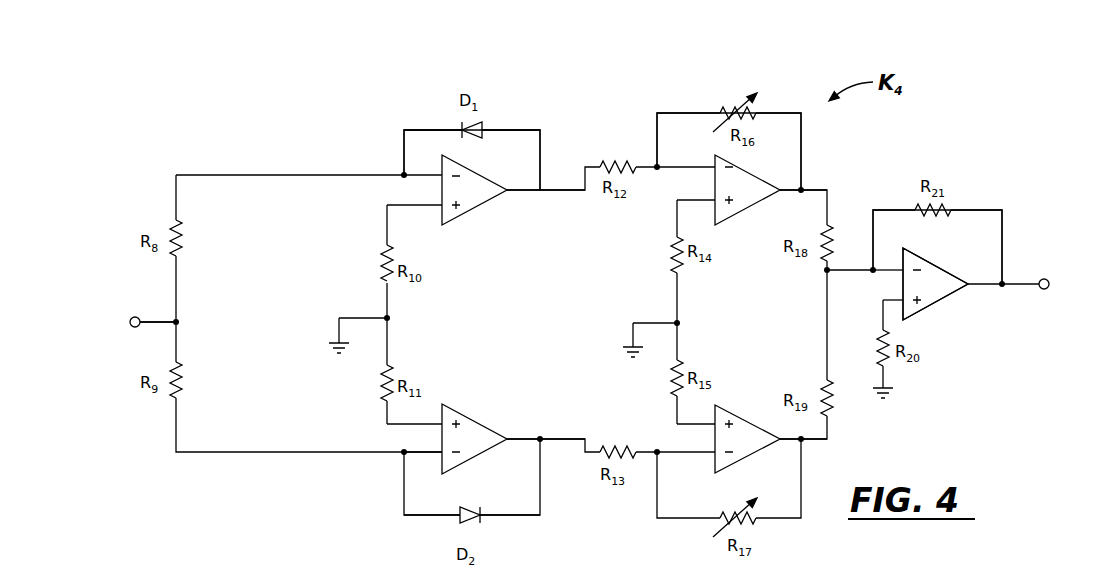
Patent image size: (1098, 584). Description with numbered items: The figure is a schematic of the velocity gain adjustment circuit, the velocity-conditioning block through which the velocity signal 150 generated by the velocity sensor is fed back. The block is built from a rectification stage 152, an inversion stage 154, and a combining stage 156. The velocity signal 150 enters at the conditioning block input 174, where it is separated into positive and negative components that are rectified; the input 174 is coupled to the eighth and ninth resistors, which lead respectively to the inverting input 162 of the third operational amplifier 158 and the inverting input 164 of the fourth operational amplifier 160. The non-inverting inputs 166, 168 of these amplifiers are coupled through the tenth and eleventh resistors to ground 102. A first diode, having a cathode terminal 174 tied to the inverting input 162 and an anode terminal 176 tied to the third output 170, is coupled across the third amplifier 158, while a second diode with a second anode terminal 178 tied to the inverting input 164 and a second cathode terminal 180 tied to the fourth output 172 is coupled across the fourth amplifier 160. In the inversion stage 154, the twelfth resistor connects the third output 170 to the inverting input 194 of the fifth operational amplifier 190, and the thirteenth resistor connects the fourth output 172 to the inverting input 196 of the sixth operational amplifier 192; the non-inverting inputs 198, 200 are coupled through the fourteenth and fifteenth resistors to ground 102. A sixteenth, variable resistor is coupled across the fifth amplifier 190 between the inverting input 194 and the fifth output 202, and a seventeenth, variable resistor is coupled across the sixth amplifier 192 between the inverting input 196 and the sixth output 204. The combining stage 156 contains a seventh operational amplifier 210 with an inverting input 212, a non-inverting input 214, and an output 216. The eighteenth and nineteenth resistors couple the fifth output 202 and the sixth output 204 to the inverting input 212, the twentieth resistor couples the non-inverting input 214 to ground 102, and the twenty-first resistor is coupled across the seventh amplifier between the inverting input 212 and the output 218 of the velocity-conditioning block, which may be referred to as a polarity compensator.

The ground 102 is at (340, 340).
The velocity signal 150 is at (157, 320).
The rectification stage 152 is at (446, 92).
The inversion stage 154 is at (710, 83).
The combining stage 156 is at (938, 393).
The third operational amplifier 158 is at (482, 206).
The fourth operational amplifier 160 is at (468, 417).
The inverting input 162 is at (442, 172).
The inverting input 164 is at (440, 457).
The non-inverting input 166 is at (442, 210).
The non-inverting input 168 is at (440, 412).
The third output 170 is at (508, 192).
The fourth output 172 is at (527, 424).
The conditioning block input 174 is at (130, 325).
The anode terminal 176 is at (482, 128).
The second anode terminal 178 is at (458, 514).
The second cathode terminal 180 is at (482, 518).
The fifth operational amplifier 190 is at (743, 210).
The sixth operational amplifier 192 is at (743, 410).
The inverting input 194 is at (715, 163).
The inverting input 196 is at (713, 453).
The non-inverting input 198 is at (715, 200).
The non-inverting input 200 is at (714, 427).
The fifth output 202 is at (800, 184).
The sixth output 204 is at (776, 438).
The seventh operational amplifier 210 is at (930, 260).
The inverting input 212 is at (902, 267).
The non-inverting input 214 is at (903, 315).
The output 216 is at (967, 285).
The output of the velocity-conditioning block 218 is at (1042, 278).